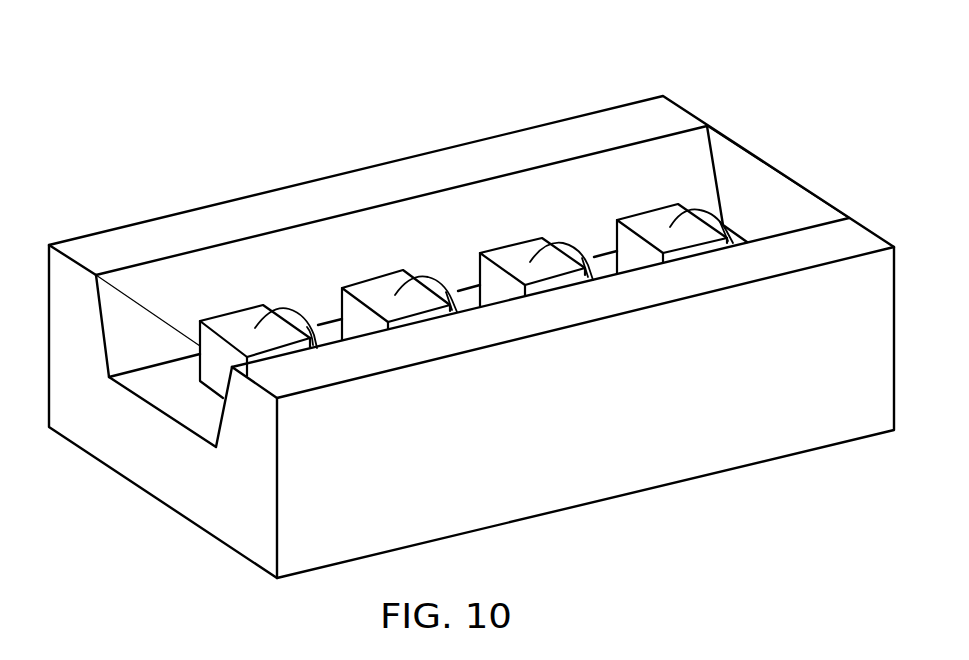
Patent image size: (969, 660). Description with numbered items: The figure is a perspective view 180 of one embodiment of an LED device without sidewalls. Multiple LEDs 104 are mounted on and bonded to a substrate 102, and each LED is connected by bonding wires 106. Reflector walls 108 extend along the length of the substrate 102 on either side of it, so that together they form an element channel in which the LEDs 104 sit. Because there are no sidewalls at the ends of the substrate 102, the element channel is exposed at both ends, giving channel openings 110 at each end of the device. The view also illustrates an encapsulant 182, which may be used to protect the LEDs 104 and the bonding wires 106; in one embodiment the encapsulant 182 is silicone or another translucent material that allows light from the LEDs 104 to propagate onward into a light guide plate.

The perspective view 180 is at (204, 78).
The substrate 102 is at (188, 503).
The reflector walls 108 is at (325, 196).
The channel openings 110 is at (149, 377).
The encapsulant 182 is at (736, 158).
The LEDs 104 is at (512, 260).
The bonding wires 106 is at (560, 242).